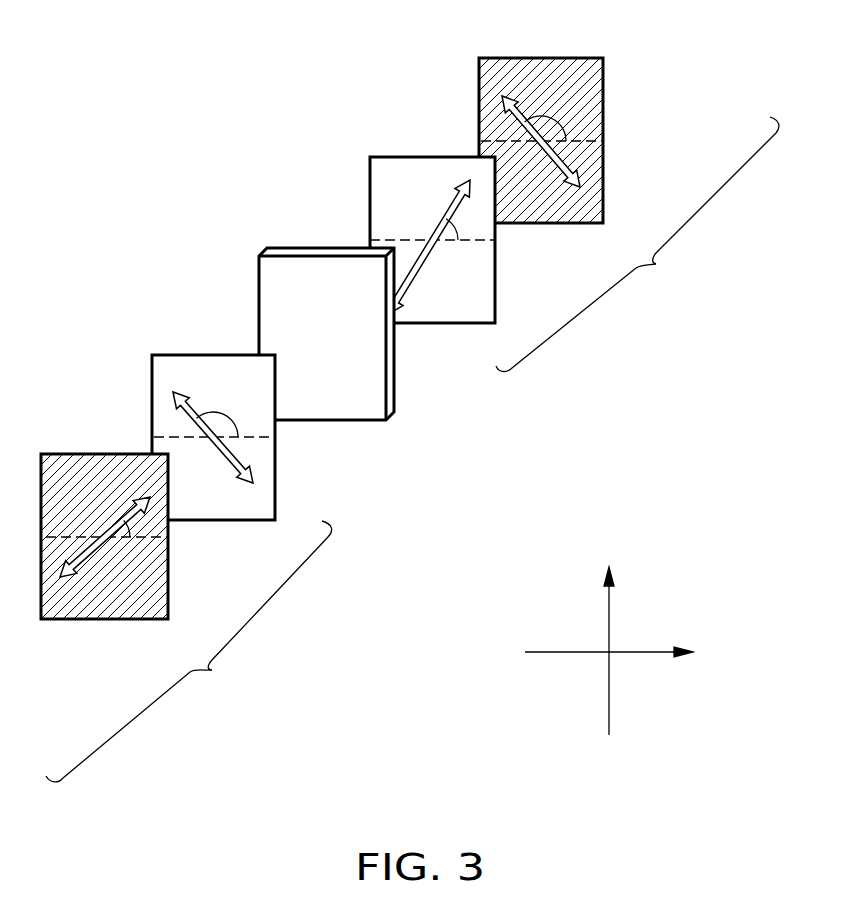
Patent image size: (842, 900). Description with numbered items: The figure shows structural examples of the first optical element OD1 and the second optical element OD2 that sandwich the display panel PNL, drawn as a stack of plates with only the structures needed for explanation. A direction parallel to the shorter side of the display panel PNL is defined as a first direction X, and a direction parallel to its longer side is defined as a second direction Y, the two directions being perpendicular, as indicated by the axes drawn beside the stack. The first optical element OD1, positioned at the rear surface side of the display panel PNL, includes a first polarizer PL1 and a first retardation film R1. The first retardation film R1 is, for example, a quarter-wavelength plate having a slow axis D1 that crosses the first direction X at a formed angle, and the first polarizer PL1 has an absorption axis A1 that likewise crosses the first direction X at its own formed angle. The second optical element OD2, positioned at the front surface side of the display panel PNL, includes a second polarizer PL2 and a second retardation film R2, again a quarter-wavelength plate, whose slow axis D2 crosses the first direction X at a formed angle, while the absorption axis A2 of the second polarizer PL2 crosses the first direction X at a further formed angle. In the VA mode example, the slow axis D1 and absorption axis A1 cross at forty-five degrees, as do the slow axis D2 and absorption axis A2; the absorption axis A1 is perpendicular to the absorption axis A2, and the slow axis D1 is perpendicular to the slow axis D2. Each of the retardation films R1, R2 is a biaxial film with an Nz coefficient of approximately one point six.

The first polarizer PL1 is at (63, 454).
The second polarizer PL2 is at (503, 58).
The first retardation film R1 is at (173, 355).
The second retardation film R2 is at (393, 157).
The display panel PNL is at (394, 415).
The absorption axis A1 is at (93, 554).
The absorption axis A2 is at (575, 161).
The slow axis D1 is at (229, 464).
The slow axis D2 is at (407, 280).
The first optical element OD1 is at (189, 651).
The second optical element OD2 is at (637, 244).
The first direction X is at (620, 653).
The second direction Y is at (609, 633).